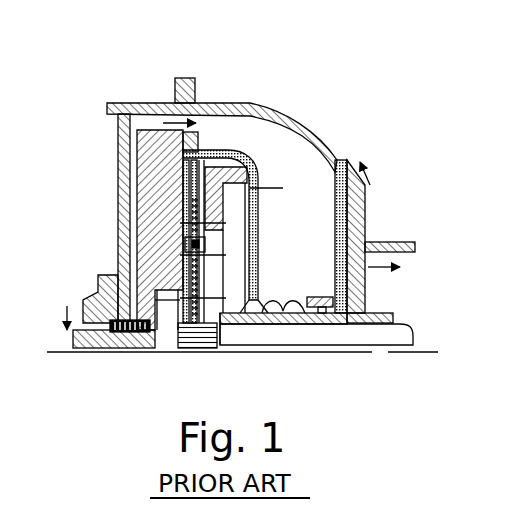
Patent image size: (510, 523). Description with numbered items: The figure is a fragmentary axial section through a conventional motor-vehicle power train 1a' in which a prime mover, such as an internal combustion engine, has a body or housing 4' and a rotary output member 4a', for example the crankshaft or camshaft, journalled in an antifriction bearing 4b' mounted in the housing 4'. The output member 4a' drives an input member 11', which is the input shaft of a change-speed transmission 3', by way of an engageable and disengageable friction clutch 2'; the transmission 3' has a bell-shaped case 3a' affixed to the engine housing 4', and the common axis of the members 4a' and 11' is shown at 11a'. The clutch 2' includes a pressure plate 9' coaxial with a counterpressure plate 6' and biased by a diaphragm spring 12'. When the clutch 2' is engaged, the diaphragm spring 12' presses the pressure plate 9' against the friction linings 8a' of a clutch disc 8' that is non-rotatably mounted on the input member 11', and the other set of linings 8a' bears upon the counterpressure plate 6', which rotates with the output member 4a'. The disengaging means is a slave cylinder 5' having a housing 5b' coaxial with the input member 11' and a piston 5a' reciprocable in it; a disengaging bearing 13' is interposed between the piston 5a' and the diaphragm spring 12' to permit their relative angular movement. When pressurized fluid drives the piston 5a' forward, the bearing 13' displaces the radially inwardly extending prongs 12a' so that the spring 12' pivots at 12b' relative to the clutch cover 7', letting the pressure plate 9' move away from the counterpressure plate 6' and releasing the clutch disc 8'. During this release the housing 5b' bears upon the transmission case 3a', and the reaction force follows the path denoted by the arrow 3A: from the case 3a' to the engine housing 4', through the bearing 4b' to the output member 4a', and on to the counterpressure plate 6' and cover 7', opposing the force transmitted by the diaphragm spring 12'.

The prior art lamp unit 1a' is at (399, 79).
The friction clutch 2' is at (222, 125).
The change-speed transmission 3' is at (393, 241).
The arrow denoting flow of force 3A is at (165, 68).
The bell-shaped housing or case 3a' is at (278, 96).
The body or housing 4' is at (96, 222).
The rotary output member 4a' is at (116, 339).
The antifriction bearing 4b' is at (113, 361).
The slave cylinder 5' is at (283, 358).
The piston 5a' is at (315, 279).
The cylinder or housing 5b' is at (415, 265).
The counterpressure plate 6' is at (170, 104).
The housing or cover 7' is at (228, 113).
The clutch disc 8' is at (211, 281).
The friction linings 8a' is at (123, 230).
The pressure plate 9' is at (249, 112).
The input member 11' is at (316, 363).
The common axis 11a' is at (181, 349).
The diaphragm spring 12' is at (259, 231).
The tongues or prongs 12a' is at (296, 219).
The pivot of diaphragm spring 12b' is at (157, 210).
The disengaging bearing 13' is at (276, 352).